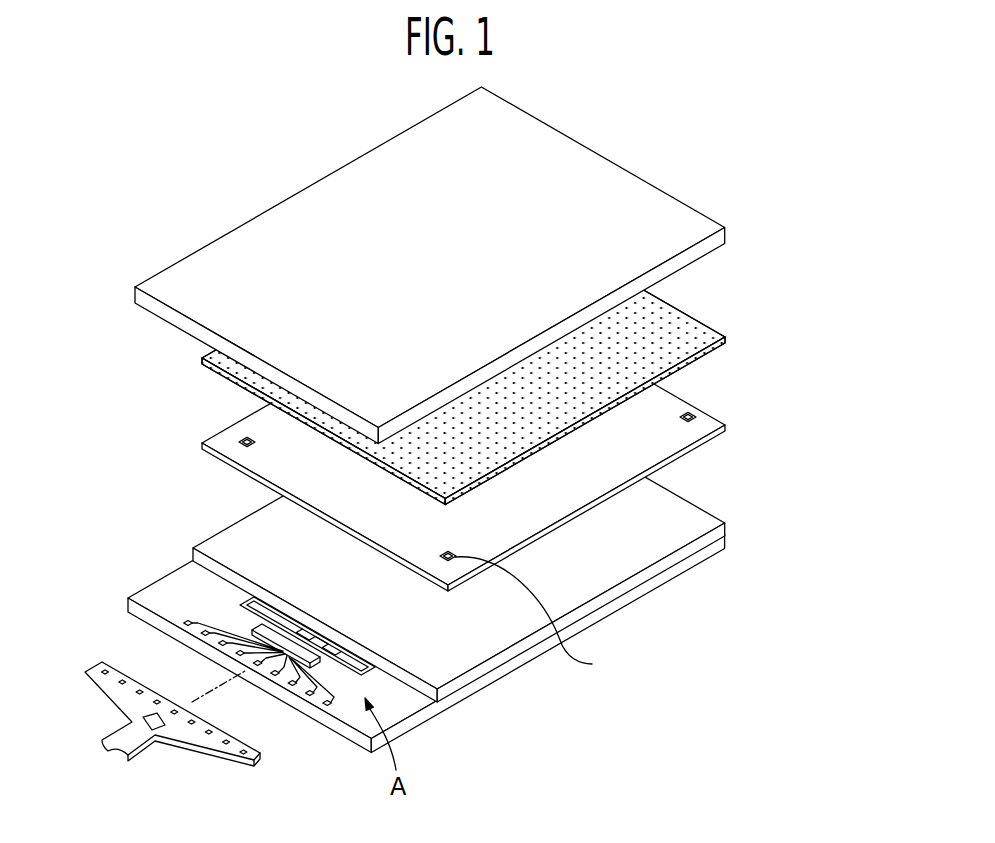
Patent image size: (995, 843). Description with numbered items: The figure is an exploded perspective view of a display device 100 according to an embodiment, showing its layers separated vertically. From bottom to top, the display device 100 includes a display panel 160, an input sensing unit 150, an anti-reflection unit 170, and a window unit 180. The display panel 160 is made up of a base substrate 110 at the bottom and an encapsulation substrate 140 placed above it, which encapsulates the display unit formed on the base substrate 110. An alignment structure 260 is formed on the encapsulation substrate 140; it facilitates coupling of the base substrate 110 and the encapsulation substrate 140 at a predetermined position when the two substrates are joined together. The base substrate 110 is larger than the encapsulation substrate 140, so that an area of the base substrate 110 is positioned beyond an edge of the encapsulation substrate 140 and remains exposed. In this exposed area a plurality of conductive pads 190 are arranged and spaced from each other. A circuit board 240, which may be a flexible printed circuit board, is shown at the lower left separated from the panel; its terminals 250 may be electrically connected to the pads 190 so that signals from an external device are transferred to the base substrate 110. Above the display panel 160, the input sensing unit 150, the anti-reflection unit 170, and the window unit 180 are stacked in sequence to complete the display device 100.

The display device 100 is at (484, 439).
The base substrate 110 is at (459, 594).
The encapsulation substrate 140 is at (698, 513).
The input sensing unit 150 is at (712, 420).
The display panel 160 is at (484, 588).
The anti-reflection unit 170 is at (700, 320).
The window unit 180 is at (697, 218).
The conductive pads 190 is at (327, 707).
The circuit board 240 is at (172, 743).
The terminals 250 is at (222, 745).
The alignment structure 260 is at (542, 619).